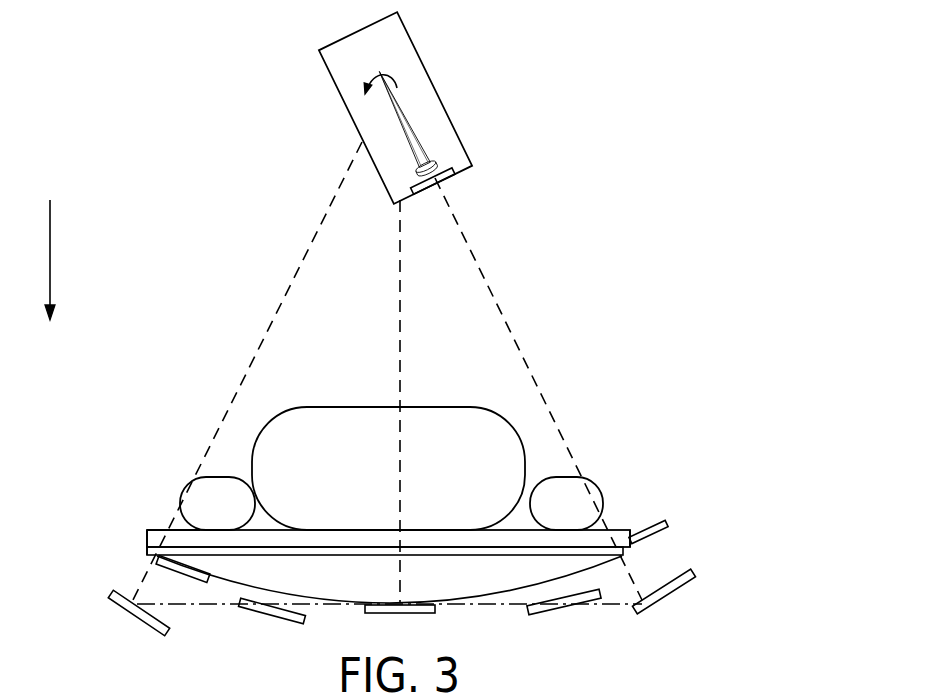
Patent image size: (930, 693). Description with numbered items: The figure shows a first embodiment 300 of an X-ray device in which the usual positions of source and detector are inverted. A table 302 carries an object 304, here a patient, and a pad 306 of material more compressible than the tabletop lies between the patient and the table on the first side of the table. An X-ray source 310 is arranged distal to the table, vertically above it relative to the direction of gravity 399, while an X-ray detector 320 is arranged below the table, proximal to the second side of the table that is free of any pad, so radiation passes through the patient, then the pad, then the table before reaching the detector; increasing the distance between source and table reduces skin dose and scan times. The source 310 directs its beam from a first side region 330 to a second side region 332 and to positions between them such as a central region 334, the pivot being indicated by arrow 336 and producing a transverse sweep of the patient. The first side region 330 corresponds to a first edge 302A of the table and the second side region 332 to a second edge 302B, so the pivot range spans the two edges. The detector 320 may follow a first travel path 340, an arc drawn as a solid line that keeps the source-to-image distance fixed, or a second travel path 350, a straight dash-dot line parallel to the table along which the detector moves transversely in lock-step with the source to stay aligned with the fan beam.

The first embodiment 300 is at (700, 28).
The table 302 is at (448, 556).
The first edge 302A is at (632, 553).
The second edge 302B is at (146, 553).
The object 304 is at (363, 405).
The pad 306 is at (162, 530).
The X-ray source 310 is at (318, 50).
The X-ray detector 320 is at (108, 595).
The first side region 330 is at (517, 349).
The second side region 332 is at (253, 357).
The central region 334 is at (400, 300).
The arrow 336 is at (397, 88).
The first travel path 340 is at (225, 587).
The second travel path 350 is at (202, 606).
The direction of gravity 399 is at (50, 247).